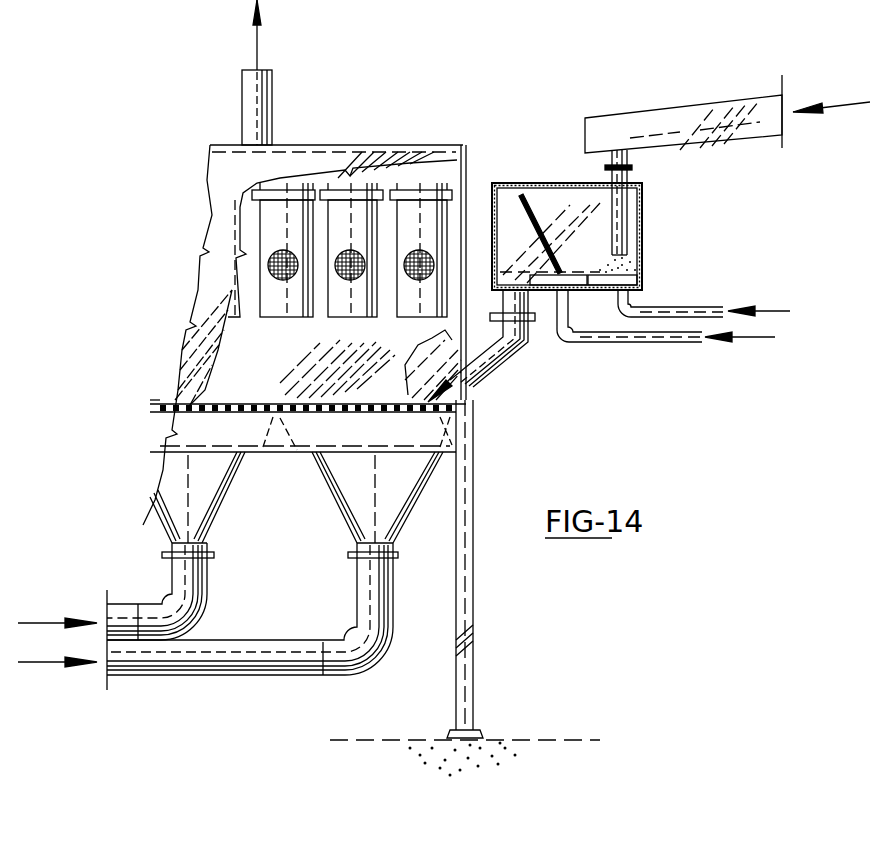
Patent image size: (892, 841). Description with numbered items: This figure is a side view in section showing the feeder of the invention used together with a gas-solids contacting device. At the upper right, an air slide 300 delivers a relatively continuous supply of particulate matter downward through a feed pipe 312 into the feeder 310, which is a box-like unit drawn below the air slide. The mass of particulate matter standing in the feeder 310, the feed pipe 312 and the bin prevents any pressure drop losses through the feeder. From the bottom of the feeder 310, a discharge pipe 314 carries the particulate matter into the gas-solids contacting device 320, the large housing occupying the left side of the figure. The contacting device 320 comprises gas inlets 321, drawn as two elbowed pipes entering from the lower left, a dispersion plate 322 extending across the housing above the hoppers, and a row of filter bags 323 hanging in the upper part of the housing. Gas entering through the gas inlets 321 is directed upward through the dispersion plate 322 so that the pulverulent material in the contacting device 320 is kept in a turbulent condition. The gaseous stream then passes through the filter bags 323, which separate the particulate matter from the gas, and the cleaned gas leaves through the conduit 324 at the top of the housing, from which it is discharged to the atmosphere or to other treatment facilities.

The air slide 300 is at (700, 134).
The feeder 310 is at (643, 233).
The feed pipe 312 is at (628, 197).
The discharge pipe 314 is at (488, 363).
The gas-solids contacting device 320 is at (463, 158).
The gas inlets 321 is at (195, 623).
The dispersion plate 322 is at (243, 407).
The filter bags 323 is at (360, 317).
The conduit 324 is at (272, 105).